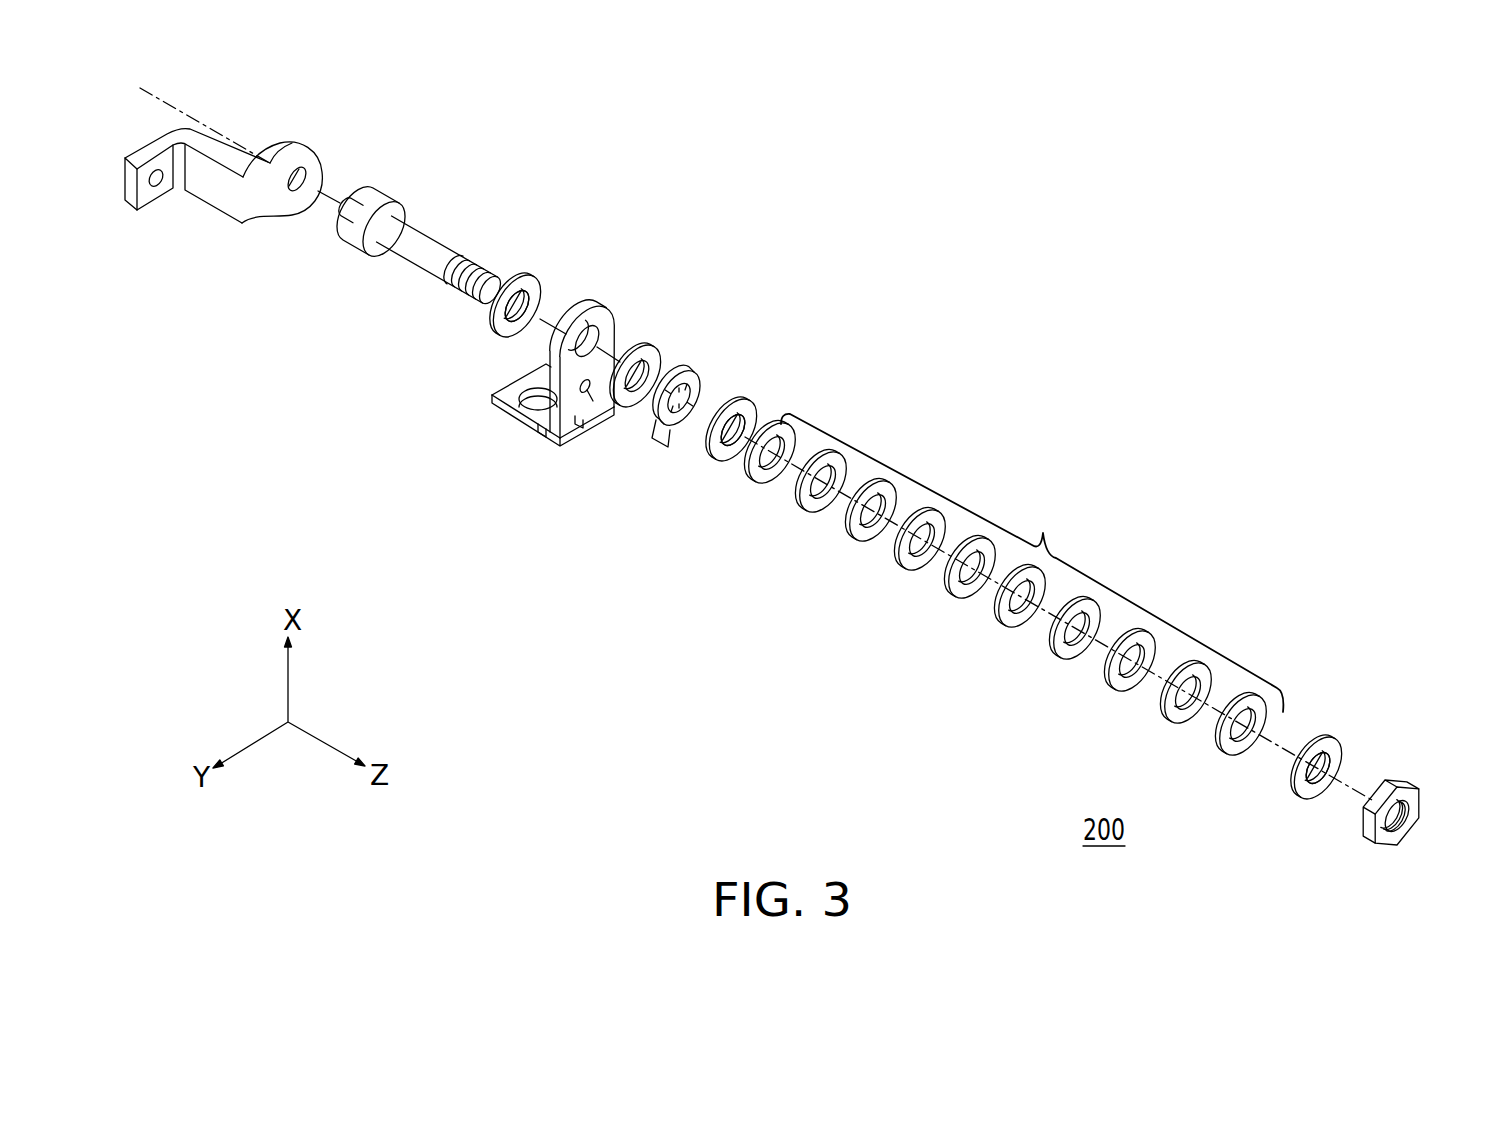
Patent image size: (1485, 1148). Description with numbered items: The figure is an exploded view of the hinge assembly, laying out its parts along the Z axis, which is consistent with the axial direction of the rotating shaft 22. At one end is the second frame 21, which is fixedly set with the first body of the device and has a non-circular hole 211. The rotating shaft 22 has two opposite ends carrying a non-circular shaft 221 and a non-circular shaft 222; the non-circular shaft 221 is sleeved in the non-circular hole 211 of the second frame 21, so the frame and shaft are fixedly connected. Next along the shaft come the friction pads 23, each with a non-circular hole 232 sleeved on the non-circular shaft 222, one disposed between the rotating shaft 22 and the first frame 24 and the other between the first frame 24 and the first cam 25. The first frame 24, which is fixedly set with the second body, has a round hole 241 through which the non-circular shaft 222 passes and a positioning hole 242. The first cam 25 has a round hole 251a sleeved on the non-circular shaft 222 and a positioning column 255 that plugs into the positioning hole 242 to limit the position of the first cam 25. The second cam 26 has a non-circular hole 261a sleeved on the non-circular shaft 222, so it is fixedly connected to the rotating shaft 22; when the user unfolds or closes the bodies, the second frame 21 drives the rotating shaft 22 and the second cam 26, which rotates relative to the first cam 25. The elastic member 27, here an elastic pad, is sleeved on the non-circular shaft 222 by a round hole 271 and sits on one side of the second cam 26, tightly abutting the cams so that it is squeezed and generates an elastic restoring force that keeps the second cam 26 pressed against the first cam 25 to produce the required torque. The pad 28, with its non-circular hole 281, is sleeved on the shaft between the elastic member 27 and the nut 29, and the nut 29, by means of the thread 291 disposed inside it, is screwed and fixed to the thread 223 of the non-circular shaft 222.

The second frame 21 is at (247, 165).
The non-circular hole 211 is at (307, 176).
The rotating shaft 22 is at (394, 249).
The non-circular shaft 221 is at (332, 214).
The non-circular shaft 222 is at (447, 242).
The thread 223 is at (463, 295).
The friction pad 23 is at (601, 320).
The non-circular hole 232 is at (526, 304).
The first frame 24 is at (565, 401).
The round hole 241 is at (593, 341).
The positioning hole 242 is at (537, 432).
The first cam 25 is at (694, 420).
The round hole 251a is at (686, 392).
The positioning column 255 is at (649, 442).
The second cam 26 is at (771, 409).
The non-circular hole 261a is at (739, 428).
The elastic member 27 is at (1011, 588).
The round hole 271 is at (825, 483).
The pad 28 is at (1351, 742).
The non-circular hole 281 is at (1322, 768).
The nut 29 is at (1383, 828).
The thread 291 is at (1369, 840).